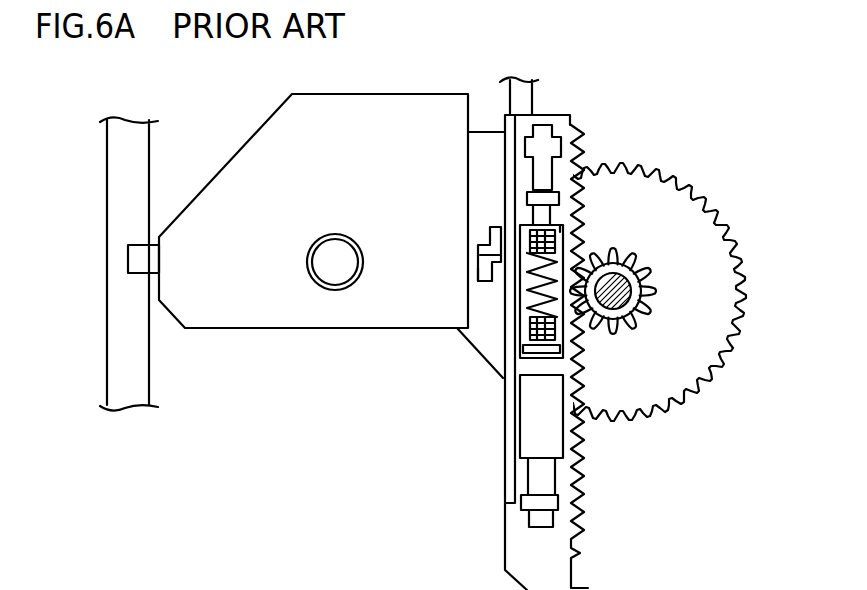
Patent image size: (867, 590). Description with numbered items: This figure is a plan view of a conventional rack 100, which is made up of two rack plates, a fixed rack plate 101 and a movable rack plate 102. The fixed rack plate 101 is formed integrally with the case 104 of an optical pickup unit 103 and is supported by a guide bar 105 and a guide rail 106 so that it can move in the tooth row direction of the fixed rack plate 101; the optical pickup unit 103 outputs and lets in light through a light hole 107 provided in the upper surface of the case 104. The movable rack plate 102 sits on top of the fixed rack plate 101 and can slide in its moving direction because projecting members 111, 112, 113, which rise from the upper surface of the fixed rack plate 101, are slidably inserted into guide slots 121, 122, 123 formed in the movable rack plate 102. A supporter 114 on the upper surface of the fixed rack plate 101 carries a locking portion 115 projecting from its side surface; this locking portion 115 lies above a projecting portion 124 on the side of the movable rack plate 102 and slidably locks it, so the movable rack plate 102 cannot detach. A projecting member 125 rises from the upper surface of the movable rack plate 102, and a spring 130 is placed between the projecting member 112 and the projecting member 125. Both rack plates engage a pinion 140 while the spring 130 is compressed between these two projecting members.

The rack 100 is at (591, 476).
The fixed rack plate 101 is at (545, 562).
The movable rack plate 102 is at (547, 551).
The optical pickup unit 103 is at (294, 350).
The case 104 is at (277, 175).
The guide bar 105 is at (518, 103).
The guide rail 106 is at (125, 207).
The light hole 107 is at (333, 262).
The projecting member 111 is at (533, 527).
The projecting member 112 is at (542, 362).
The projecting member 113 is at (540, 200).
The supporter 114 is at (478, 268).
The locking portion 115 is at (492, 257).
The guide slot 121 is at (540, 475).
The guide slot 122 is at (547, 303).
The guide slot 123 is at (542, 172).
The projecting portion 124 is at (495, 230).
The projecting member 125 is at (553, 211).
The spring 130 is at (466, 330).
The pinion 140 is at (627, 257).